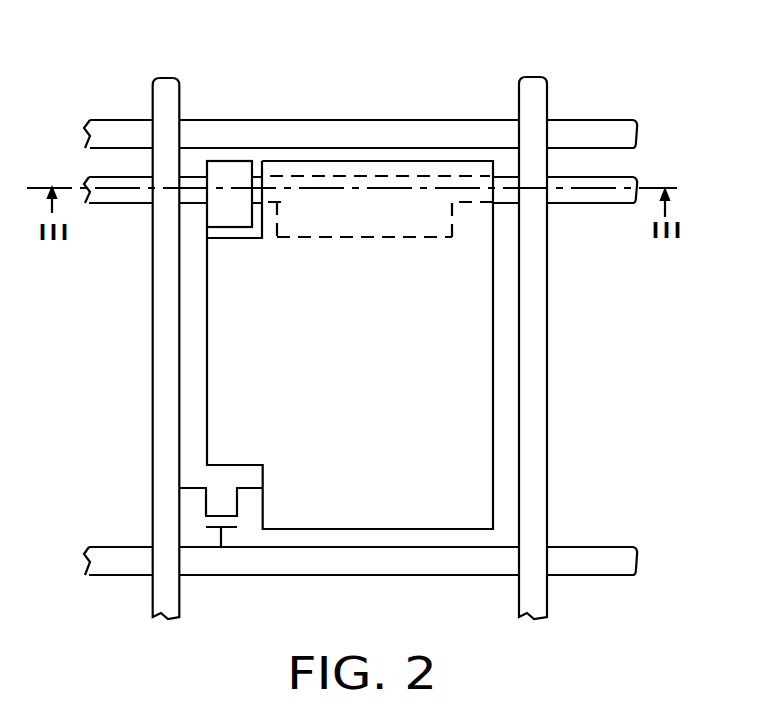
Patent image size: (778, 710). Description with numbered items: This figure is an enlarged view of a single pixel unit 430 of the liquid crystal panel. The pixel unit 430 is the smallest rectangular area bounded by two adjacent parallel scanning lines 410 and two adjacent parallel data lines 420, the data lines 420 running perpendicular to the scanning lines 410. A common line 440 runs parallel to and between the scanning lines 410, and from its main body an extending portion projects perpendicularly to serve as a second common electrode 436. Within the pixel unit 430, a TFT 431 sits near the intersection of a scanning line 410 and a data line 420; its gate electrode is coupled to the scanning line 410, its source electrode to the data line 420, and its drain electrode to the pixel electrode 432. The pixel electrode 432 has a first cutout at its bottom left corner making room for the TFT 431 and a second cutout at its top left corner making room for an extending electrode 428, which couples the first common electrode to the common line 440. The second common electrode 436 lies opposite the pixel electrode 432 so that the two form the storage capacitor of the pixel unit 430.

The scanning line 410 is at (612, 134).
The data line 420 is at (167, 97).
The extending electrode 428 is at (220, 210).
The pixel unit 430 is at (379, 100).
The TFT 431 is at (242, 520).
The pixel electrode 432 is at (432, 396).
The second common electrode 436 is at (452, 225).
The common line 440 is at (617, 182).